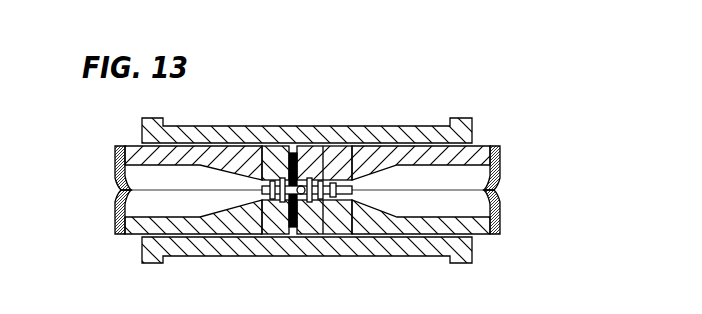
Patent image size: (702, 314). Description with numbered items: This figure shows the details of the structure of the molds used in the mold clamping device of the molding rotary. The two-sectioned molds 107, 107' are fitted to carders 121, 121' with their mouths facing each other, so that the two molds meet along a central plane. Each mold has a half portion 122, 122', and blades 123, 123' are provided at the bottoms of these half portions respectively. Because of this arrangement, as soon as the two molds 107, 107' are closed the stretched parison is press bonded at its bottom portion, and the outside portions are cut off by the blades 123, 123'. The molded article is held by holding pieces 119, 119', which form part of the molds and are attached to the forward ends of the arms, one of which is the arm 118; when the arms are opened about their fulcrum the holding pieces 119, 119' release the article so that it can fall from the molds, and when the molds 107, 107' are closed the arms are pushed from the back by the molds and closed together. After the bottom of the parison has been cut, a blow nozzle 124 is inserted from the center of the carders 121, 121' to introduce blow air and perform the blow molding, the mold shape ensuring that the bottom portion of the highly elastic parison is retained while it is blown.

The mold 107 is at (348, 113).
The mold 107' is at (344, 265).
The carder 121 is at (307, 99).
The carder 121' is at (307, 272).
The half portion of the mold 122 is at (307, 118).
The half portion of the mold 122' is at (307, 253).
The holding piece 119 is at (275, 135).
The holding piece 119' is at (268, 247).
The arm 118 is at (296, 162).
The blow nozzle 124 is at (311, 178).
The blade 123 is at (302, 168).
The blade 123' is at (305, 212).